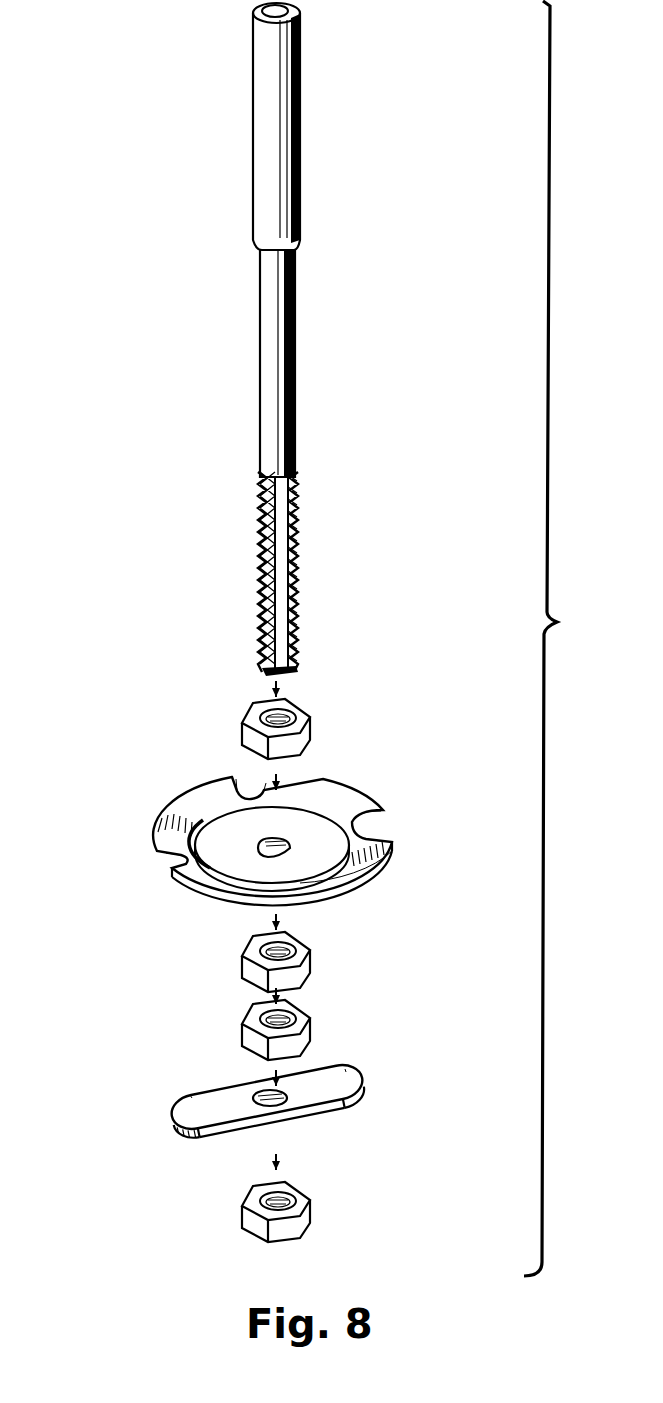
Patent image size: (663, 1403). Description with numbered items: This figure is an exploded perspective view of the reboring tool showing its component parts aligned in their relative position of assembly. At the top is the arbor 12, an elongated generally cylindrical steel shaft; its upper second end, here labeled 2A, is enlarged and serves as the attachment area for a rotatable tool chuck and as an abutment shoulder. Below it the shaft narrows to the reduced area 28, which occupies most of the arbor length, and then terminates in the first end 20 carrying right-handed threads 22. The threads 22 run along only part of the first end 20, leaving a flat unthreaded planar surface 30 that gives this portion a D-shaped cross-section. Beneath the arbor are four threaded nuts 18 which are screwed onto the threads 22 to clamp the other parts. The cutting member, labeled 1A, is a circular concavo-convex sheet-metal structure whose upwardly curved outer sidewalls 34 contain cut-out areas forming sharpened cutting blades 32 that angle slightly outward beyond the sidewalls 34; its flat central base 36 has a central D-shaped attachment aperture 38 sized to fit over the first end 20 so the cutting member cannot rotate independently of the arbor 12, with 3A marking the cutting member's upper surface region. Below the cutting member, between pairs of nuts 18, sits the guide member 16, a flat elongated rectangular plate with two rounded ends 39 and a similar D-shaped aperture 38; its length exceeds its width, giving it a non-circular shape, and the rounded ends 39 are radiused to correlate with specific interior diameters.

The arbor 12 is at (262, 339).
The tubular upper portion of rod 2A is at (240, 75).
The reduced area 28 is at (298, 297).
The first end 20 is at (279, 574).
The threads 22 is at (258, 624).
The planar surface 30 is at (279, 626).
The threaded nuts 18 is at (313, 722).
The notched disc washer 1A is at (256, 820).
The disc rim top face 3A is at (193, 808).
The cutting blades 32 is at (250, 770).
The sidewalls 34 is at (340, 883).
The base 36 is at (228, 858).
The D-shaped attachment aperture 38 is at (292, 846).
The guide member 16 is at (260, 1089).
The rounded ends 39 is at (172, 1113).